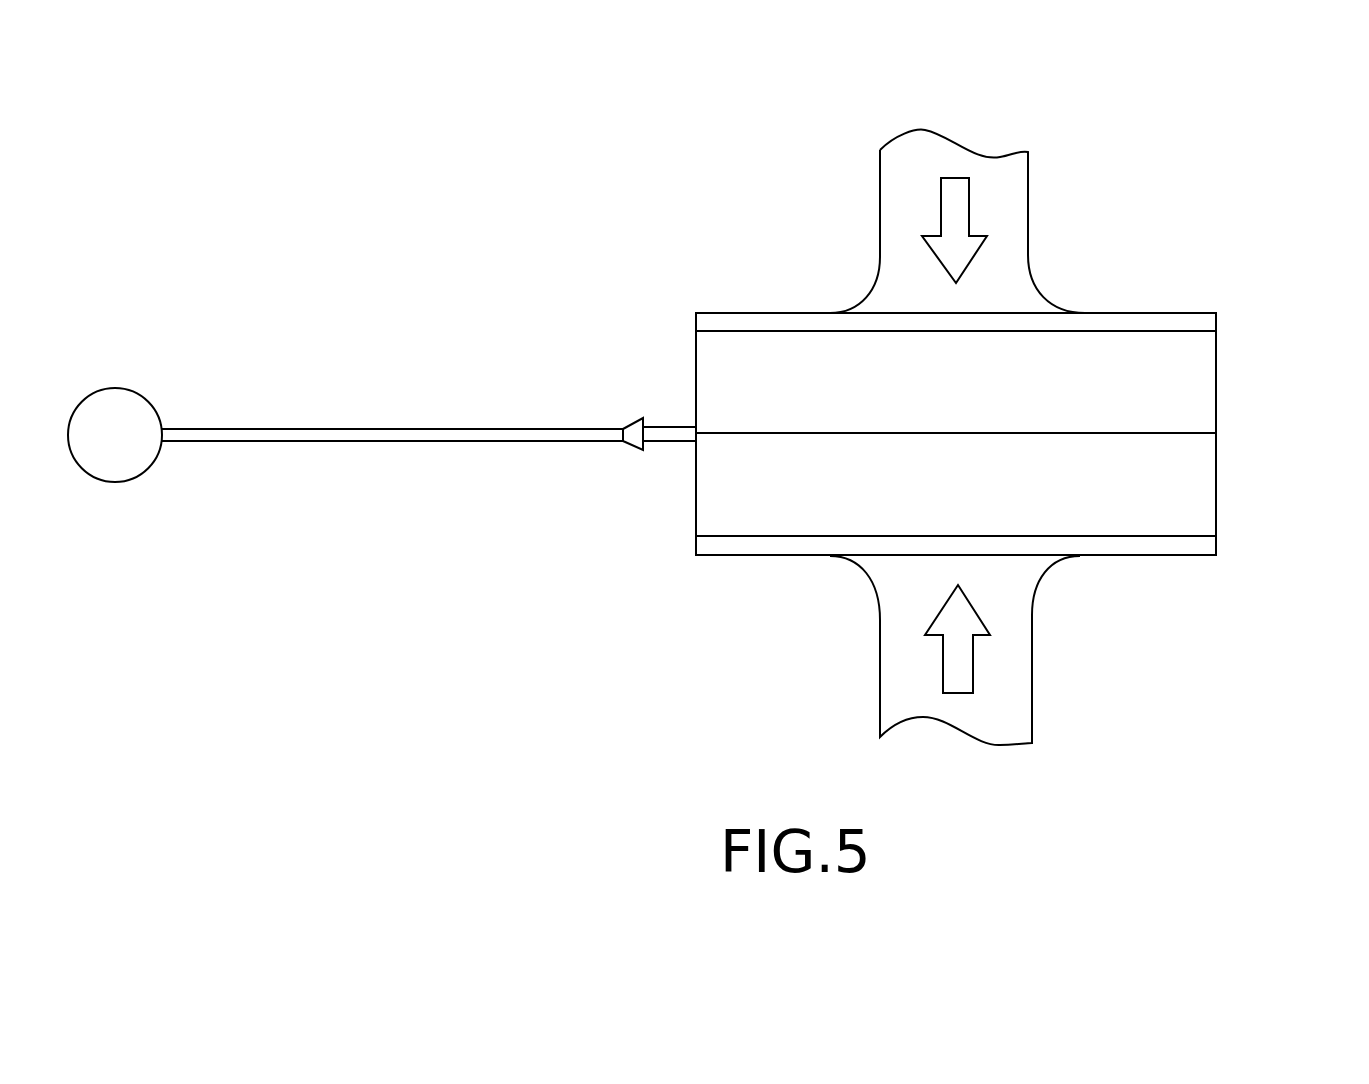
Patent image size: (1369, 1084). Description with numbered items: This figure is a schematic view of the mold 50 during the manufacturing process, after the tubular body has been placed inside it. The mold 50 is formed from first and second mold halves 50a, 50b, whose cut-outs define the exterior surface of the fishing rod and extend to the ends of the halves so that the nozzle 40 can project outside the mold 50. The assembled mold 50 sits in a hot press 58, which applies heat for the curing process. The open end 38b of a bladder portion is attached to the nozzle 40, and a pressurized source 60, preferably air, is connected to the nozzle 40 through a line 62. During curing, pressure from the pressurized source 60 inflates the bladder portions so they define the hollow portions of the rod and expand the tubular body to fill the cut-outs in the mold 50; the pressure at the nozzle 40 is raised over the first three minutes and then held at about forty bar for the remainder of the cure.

The open end 38b is at (670, 437).
The nozzle 40 is at (635, 447).
The mold 50 is at (940, 437).
The first mold half 50a is at (1200, 377).
The second mold half 50b is at (1200, 490).
The hot press 58 is at (1182, 318).
The pressurized source 60 is at (128, 468).
The line 62 is at (400, 438).